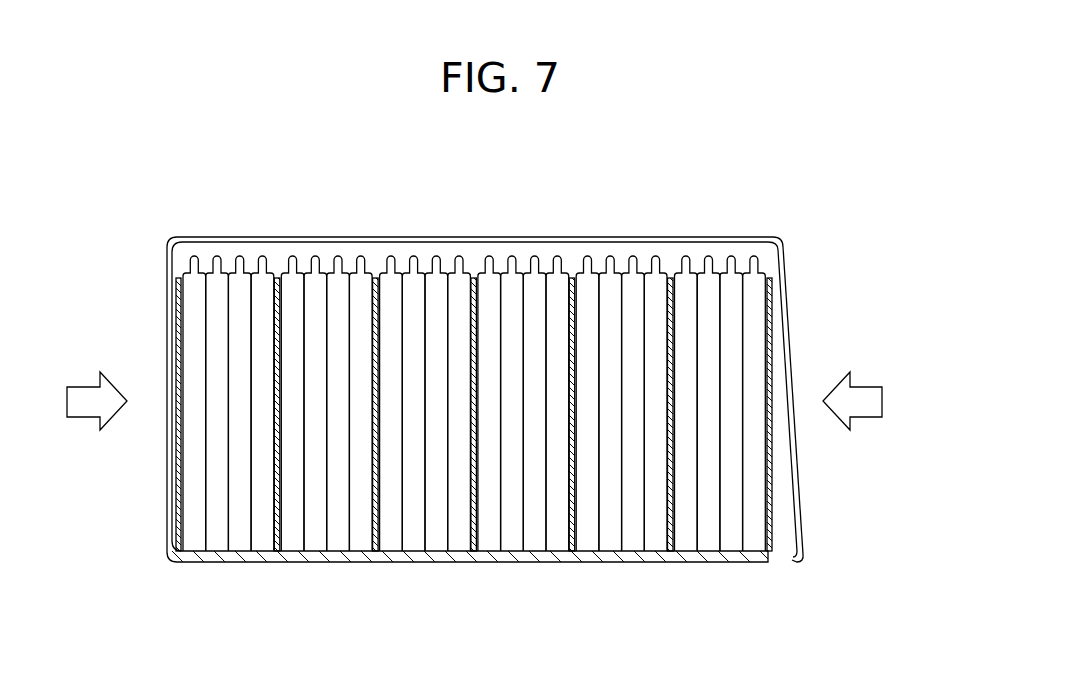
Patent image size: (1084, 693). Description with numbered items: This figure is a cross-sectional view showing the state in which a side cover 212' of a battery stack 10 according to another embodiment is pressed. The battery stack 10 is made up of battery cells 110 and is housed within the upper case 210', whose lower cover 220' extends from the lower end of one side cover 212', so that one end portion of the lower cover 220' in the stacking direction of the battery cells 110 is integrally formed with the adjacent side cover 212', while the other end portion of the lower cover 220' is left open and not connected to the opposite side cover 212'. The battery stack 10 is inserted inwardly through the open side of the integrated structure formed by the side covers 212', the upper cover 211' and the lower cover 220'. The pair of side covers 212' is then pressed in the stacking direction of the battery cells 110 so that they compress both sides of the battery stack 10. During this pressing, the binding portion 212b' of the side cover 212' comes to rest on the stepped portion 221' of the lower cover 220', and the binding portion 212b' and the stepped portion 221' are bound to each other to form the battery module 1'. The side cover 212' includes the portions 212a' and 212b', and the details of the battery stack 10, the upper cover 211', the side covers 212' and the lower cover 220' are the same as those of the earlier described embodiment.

The battery module 1' is at (501, 423).
The battery stack 10 is at (653, 550).
The battery cells 110 is at (590, 282).
The upper case 210' is at (562, 423).
The upper cover 211' is at (475, 355).
The side cover 212' is at (868, 467).
The side cover portion 212a' is at (868, 443).
The binding portion 212b' is at (829, 595).
The lower cover 220' is at (467, 590).
The stepped portion 221' is at (484, 459).